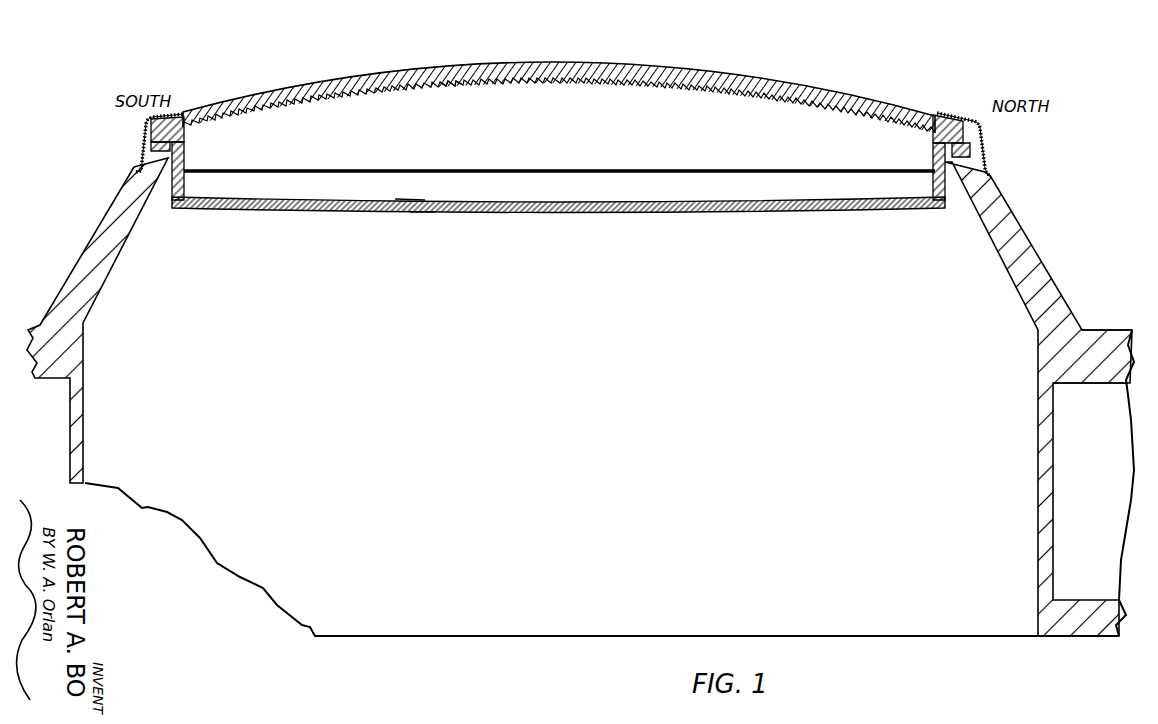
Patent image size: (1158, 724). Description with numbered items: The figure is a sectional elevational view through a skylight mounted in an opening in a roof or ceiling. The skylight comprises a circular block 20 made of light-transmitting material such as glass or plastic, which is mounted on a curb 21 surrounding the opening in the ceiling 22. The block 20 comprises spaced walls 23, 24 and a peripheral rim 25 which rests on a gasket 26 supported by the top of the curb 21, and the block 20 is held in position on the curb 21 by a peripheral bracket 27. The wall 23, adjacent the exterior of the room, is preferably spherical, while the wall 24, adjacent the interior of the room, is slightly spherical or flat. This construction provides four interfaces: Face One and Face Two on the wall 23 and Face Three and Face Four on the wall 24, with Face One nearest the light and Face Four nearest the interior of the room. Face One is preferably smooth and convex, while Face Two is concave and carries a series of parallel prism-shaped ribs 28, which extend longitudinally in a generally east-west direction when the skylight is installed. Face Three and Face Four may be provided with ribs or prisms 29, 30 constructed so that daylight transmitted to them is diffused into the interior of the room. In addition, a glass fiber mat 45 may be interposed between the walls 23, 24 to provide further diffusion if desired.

The circular block 20 is at (875, 89).
The curb 21 is at (1005, 216).
The ceiling 22 is at (1087, 347).
The wall 23 is at (690, 75).
The wall 24 is at (644, 212).
The peripheral rim 25 is at (960, 122).
The gasket 26 is at (975, 152).
The peripheral bracket 27 is at (142, 136).
The prism-shaped ribs 28 is at (460, 85).
The ribs or prisms 29 is at (410, 202).
The ribs or prisms 30 is at (424, 212).
The glass fiber mat 45 is at (496, 170).